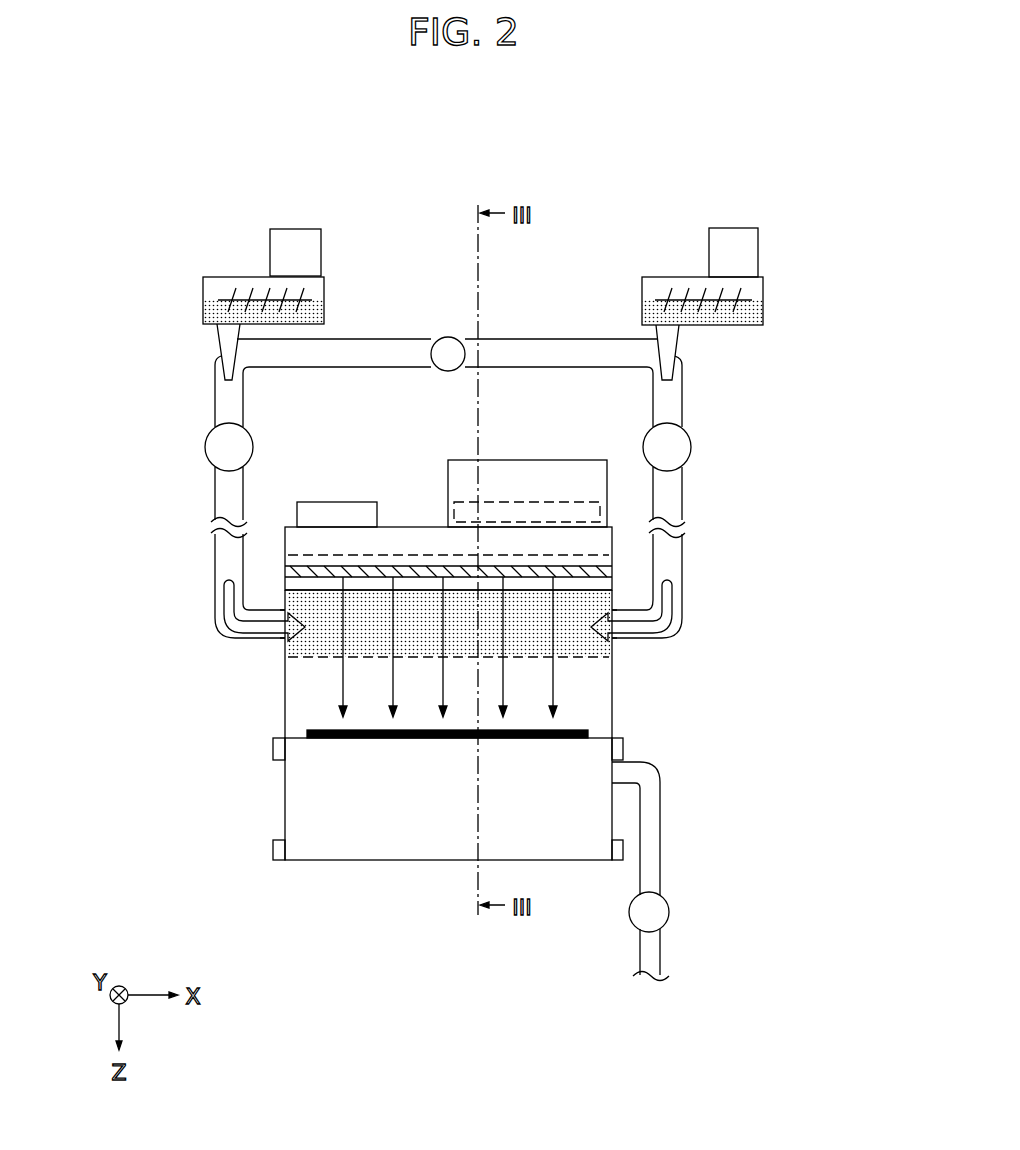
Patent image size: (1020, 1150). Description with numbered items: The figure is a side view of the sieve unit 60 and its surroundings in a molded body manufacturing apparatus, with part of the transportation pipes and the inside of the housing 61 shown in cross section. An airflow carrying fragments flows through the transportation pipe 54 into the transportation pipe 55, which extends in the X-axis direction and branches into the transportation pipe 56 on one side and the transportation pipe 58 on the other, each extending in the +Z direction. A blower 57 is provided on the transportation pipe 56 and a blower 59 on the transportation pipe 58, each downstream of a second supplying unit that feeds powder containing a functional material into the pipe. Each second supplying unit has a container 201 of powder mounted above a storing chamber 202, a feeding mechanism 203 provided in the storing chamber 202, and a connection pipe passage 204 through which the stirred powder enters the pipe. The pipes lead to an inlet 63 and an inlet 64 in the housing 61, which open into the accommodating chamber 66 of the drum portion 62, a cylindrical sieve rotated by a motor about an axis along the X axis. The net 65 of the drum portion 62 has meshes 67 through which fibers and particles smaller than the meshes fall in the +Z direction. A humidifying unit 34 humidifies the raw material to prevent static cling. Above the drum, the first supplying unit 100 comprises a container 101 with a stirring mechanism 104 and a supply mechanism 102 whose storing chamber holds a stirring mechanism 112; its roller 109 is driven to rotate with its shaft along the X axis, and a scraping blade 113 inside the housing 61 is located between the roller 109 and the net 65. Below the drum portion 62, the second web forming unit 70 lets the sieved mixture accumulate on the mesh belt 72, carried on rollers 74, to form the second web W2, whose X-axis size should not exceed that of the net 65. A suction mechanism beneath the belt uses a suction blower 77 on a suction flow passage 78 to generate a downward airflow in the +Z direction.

The container 201 is at (733, 228).
The storing chamber 202 is at (764, 292).
The feeding mechanism 203 is at (662, 296).
The connection pipe passage 204 is at (681, 337).
The transportation pipe 54 is at (448, 336).
The transportation pipe 55 is at (535, 339).
The transportation pipe 56 is at (683, 503).
The blower 57 is at (693, 447).
The transportation pipe 58 is at (215, 500).
The blower 59 is at (205, 447).
The first supplying unit 100 is at (452, 486).
The container 101 is at (518, 460).
The supply mechanism 102 is at (402, 515).
The stirring mechanism 104 is at (576, 502).
The humidifying unit 34 is at (307, 502).
The stirring mechanism 112 is at (357, 545).
The roller 109 is at (612, 571).
The scraping blade 113 is at (300, 583).
The sieve unit 60 is at (447, 657).
The housing 61 is at (283, 707).
The drum portion 62 is at (750, 682).
The inlet 63 is at (603, 640).
The inlet 64 is at (310, 638).
The net 65 is at (142, 677).
The accommodating chamber 66 is at (567, 642).
The mesh 67 is at (325, 658).
The second web W2 is at (578, 725).
The second web forming unit 70 is at (413, 845).
The mesh belt 72 is at (285, 796).
The rollers 74 is at (273, 745).
The suction blower 77 is at (670, 910).
The suction flow passage 78 is at (661, 950).